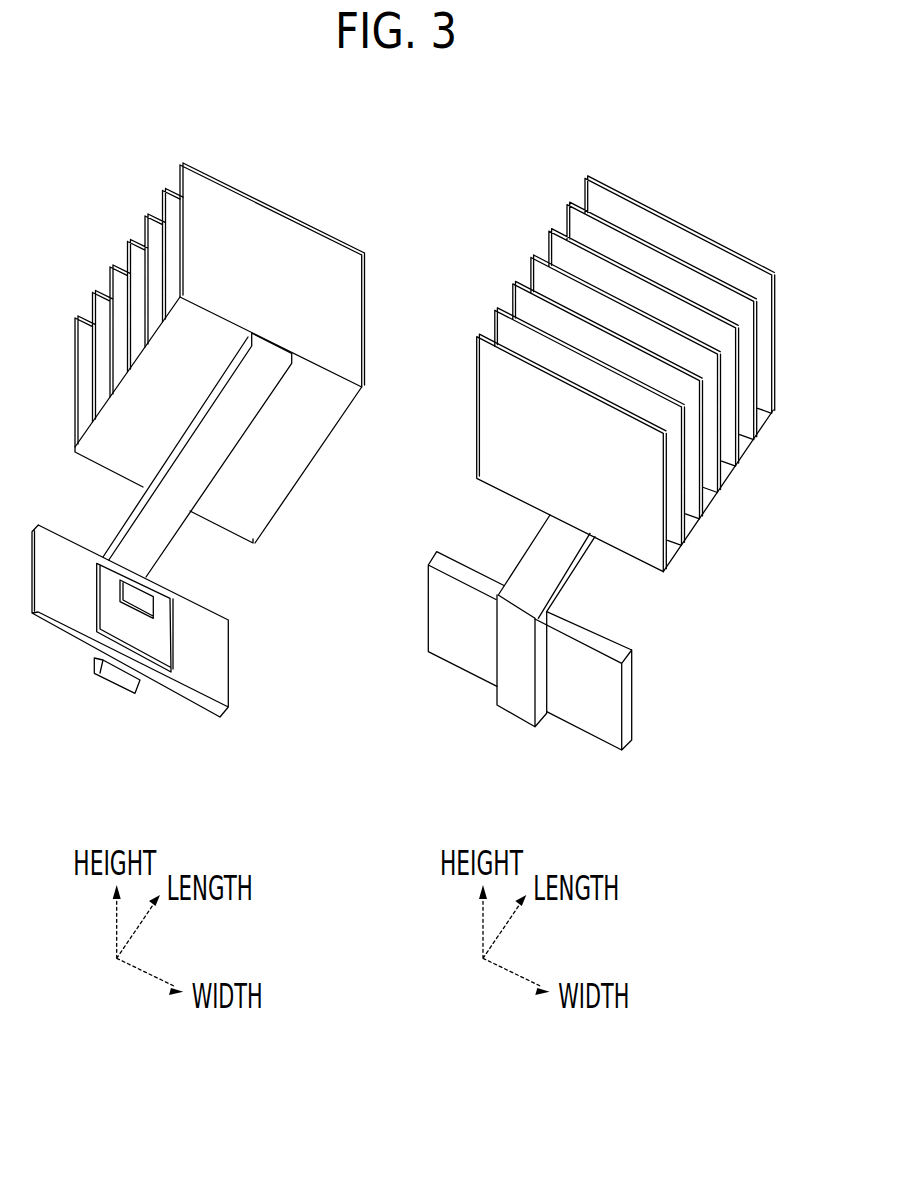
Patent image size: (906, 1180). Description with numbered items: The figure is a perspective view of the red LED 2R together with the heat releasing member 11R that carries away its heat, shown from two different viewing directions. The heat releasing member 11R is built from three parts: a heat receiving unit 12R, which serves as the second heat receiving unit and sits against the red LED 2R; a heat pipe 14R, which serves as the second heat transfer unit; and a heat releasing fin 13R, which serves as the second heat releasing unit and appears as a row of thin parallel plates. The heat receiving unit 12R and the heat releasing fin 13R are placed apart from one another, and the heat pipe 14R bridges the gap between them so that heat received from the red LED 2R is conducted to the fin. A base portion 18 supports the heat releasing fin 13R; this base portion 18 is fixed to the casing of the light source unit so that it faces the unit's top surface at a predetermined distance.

The heat releasing member 11R is at (296, 167).
The heat releasing fin 13R is at (178, 196).
The base portion 18 is at (113, 458).
The heat pipe 14R is at (156, 543).
The heat receiving unit 12R is at (228, 625).
The red LED 2R is at (160, 643).